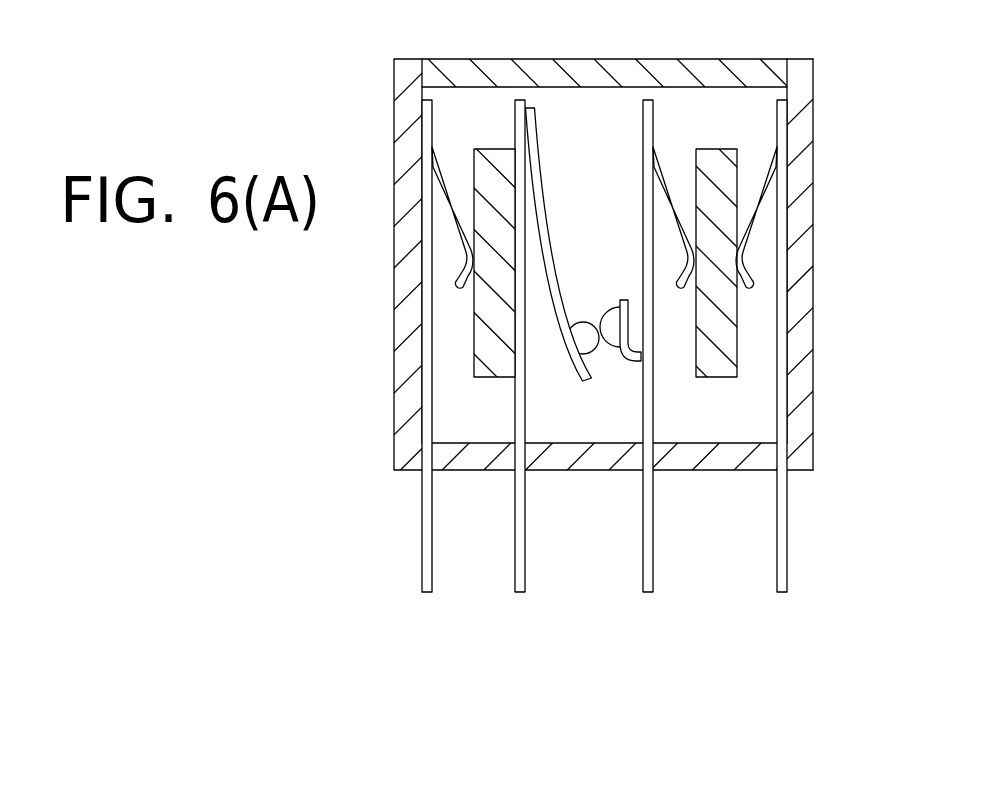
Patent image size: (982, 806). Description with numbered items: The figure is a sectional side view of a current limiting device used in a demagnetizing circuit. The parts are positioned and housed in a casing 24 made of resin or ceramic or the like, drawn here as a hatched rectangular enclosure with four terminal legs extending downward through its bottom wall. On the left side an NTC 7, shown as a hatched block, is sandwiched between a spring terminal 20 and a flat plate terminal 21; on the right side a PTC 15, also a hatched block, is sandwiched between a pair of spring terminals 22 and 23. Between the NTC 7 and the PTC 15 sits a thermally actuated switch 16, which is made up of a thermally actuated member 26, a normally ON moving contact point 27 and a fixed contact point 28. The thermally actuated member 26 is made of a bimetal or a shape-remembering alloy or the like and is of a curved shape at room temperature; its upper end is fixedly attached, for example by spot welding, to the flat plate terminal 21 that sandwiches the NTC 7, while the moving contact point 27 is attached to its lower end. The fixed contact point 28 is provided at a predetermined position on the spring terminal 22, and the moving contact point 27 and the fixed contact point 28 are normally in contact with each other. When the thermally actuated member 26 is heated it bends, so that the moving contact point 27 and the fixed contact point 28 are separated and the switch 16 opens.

The NTC 7 is at (490, 183).
The PTC 15 is at (723, 172).
The thermally actuated switch 16 is at (567, 126).
The spring terminal 20 is at (422, 356).
The flat plate terminal 21 is at (515, 127).
The spring terminal 22 is at (653, 127).
The spring terminal 23 is at (784, 357).
The casing 24 is at (815, 290).
The thermally actuated member 26 is at (545, 208).
The moving contact point 27 is at (582, 320).
The fixed contact point 28 is at (613, 362).